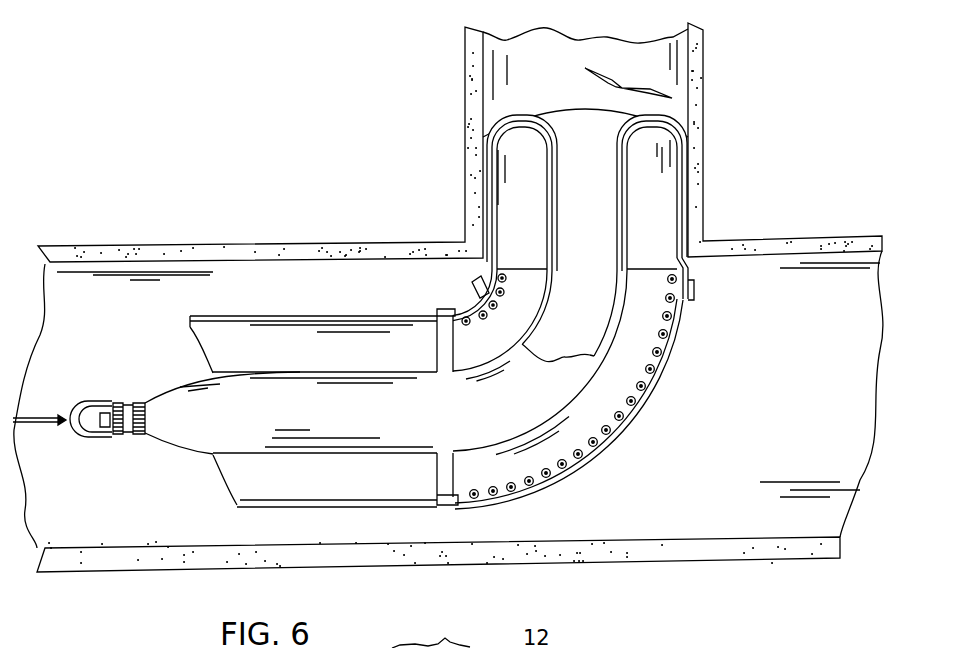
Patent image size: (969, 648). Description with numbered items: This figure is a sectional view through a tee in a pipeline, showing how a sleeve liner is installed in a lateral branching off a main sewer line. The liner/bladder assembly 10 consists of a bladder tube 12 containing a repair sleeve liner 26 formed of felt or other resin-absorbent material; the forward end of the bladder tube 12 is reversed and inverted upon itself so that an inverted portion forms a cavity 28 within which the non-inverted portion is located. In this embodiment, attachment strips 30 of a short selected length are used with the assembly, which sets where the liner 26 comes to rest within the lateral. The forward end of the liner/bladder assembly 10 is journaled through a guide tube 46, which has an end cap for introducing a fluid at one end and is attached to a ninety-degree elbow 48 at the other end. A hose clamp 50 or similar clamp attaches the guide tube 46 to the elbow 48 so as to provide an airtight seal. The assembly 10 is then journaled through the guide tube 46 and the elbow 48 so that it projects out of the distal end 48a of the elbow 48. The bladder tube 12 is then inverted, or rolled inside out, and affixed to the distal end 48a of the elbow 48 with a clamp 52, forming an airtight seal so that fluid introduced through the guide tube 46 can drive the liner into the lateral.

The liner/bladder assembly 10 is at (308, 182).
The bladder tube 12 is at (633, 176).
The repair sleeve liner 26 is at (585, 197).
The cavity 28 is at (657, 200).
The attachment strips 30 is at (460, 257).
The guide tube 46 is at (240, 318).
The elbow 48 is at (613, 442).
The distal end of elbow 48a is at (638, 292).
The hose clamp 50 is at (440, 310).
The clamp 52 is at (480, 290).